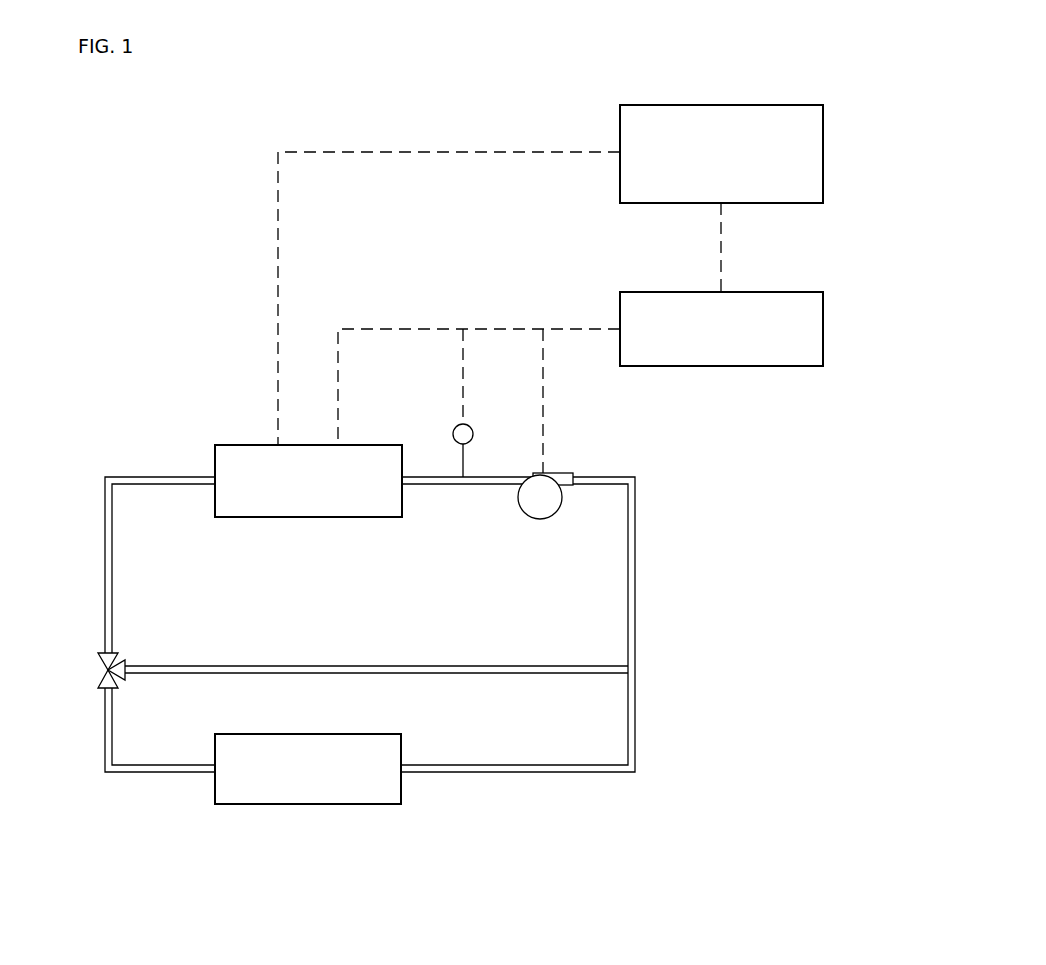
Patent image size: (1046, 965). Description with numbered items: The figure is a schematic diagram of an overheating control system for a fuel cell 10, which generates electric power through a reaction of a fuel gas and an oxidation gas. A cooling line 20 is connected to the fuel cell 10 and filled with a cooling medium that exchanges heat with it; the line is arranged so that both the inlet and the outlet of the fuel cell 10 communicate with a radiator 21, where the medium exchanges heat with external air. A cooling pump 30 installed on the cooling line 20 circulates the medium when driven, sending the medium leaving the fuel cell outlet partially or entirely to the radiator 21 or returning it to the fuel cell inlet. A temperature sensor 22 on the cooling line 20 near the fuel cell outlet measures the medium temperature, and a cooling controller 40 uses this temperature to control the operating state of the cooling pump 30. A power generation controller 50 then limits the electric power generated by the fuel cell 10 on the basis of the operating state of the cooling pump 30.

The fuel cell 10 is at (235, 445).
The cooling line 20 is at (636, 565).
The radiator 21 is at (307, 806).
The temperature sensor 22 is at (456, 426).
The cooling pump 30 is at (541, 519).
The cooling controller 40 is at (823, 328).
The power generation controller 50 is at (823, 152).